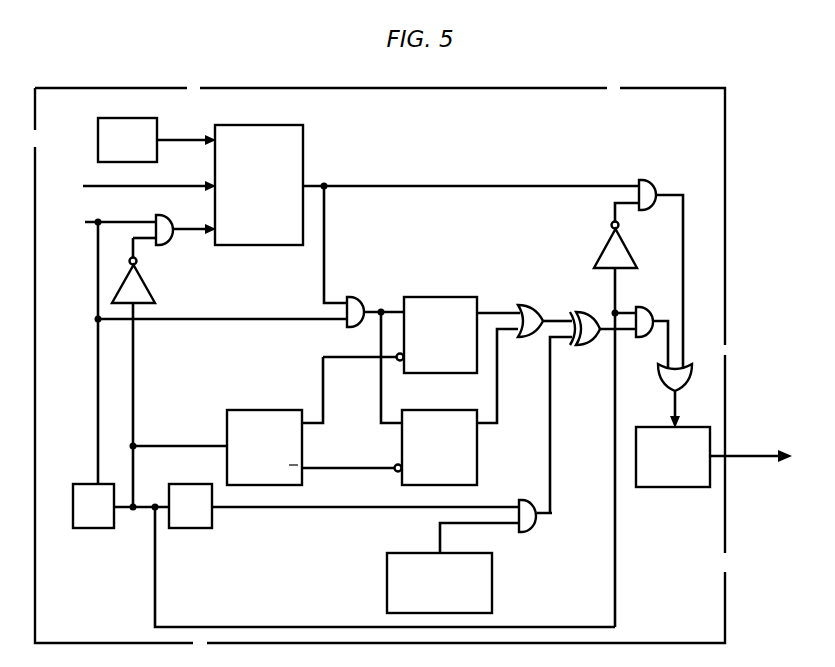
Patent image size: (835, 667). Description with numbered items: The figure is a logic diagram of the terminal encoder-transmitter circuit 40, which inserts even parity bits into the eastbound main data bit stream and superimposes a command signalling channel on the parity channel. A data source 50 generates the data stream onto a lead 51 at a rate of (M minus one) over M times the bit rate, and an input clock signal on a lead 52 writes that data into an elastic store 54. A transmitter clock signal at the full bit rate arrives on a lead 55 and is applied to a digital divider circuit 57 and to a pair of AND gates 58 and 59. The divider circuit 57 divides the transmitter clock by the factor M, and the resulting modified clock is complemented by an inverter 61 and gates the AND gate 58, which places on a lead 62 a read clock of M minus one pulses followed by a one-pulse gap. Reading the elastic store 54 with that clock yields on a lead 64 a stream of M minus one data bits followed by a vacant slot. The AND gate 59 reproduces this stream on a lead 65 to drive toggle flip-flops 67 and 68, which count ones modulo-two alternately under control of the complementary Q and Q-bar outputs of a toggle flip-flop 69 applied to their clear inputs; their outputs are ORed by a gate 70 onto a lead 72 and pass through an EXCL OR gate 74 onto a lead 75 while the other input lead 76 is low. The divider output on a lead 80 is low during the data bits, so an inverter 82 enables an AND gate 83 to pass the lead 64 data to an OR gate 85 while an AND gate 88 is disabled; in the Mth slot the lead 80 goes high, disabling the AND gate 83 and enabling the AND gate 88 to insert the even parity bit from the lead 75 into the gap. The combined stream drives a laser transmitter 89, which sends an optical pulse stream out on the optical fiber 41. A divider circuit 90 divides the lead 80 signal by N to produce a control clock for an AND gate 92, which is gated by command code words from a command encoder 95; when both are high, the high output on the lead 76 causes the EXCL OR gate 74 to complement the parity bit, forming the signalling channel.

The encoder-transmitter circuit 40 is at (410, 88).
The optical fiber 41 is at (752, 452).
The data source 50 is at (98, 140).
The lead 51 is at (180, 140).
The lead 52 is at (180, 186).
The elastic store 54 is at (270, 125).
The lead 55 is at (93, 228).
The digital divider circuit 57 is at (93, 528).
The AND gate 58 is at (168, 242).
The AND gate 59 is at (355, 297).
The inverter 61 is at (146, 286).
The lead 62 is at (181, 229).
The lead 64 is at (470, 186).
The lead 65 is at (383, 310).
The toggle flip-flop 67 is at (462, 297).
The toggle flip-flop 68 is at (436, 410).
The toggle flip-flop 69 is at (264, 410).
The OR gate 70 is at (529, 305).
The lead 72 is at (555, 320).
The EXCL OR gate 74 is at (585, 310).
The lead 75 is at (605, 343).
The lead 76 is at (550, 370).
The lead 80 is at (548, 627).
The inverter 82 is at (636, 252).
The AND gate 83 is at (645, 181).
The OR gate 85 is at (660, 375).
The AND gate 88 is at (638, 307).
The laser transmitter 89 is at (677, 487).
The divider circuit 90 is at (190, 528).
The AND gate 92 is at (528, 500).
The command encoder 95 is at (387, 580).